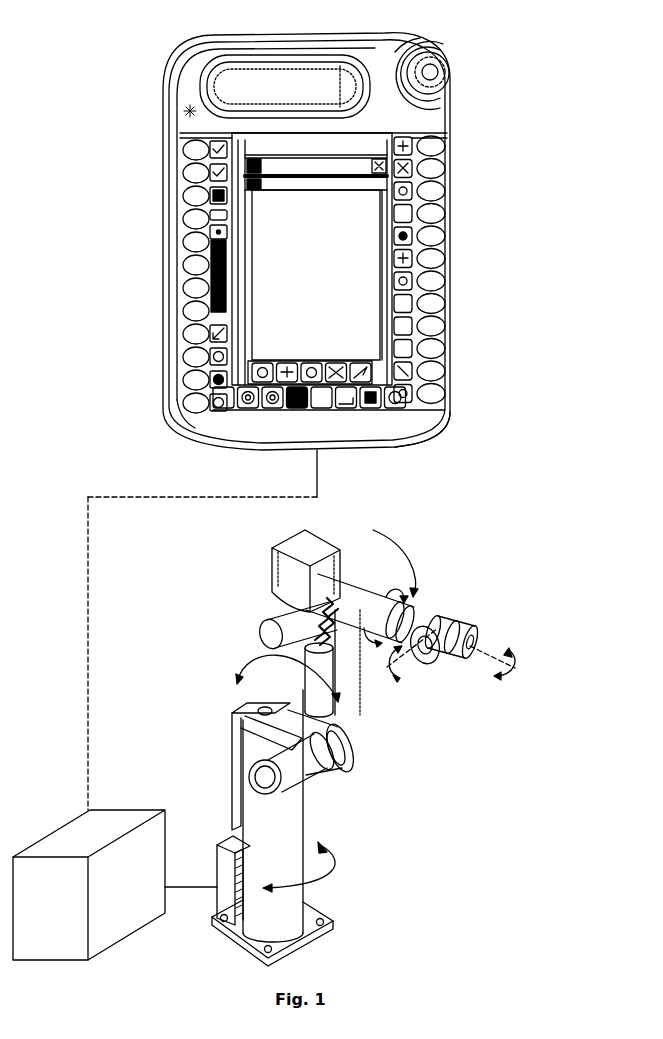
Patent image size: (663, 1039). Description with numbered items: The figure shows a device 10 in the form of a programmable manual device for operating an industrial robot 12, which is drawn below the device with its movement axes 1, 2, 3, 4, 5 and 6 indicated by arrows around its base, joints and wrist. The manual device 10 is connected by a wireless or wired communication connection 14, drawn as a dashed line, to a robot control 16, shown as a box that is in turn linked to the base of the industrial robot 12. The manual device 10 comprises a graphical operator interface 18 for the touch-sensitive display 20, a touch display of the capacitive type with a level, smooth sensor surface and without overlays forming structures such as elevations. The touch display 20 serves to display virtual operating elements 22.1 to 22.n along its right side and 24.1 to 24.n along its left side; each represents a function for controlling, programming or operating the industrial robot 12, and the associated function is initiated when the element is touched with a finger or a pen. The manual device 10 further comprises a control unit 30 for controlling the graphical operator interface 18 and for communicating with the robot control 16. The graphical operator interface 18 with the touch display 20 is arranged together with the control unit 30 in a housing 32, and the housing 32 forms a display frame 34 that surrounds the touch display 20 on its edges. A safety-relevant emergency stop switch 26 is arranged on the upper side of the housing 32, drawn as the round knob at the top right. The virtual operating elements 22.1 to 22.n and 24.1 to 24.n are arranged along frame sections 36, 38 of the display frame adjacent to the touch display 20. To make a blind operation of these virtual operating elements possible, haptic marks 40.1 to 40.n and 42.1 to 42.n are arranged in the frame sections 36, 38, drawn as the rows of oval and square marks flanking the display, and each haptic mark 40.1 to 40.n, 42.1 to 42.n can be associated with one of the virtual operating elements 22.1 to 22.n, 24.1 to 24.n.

The robot axis 1 is at (300, 867).
The robot axis 2 is at (284, 674).
The robot axis 3 is at (395, 561).
The robot axis 4 is at (386, 610).
The robot axis 5 is at (412, 668).
The robot axis 6 is at (492, 651).
The manual device 10 is at (213, 29).
The industrial robot 12 is at (198, 583).
The communication connection 14 is at (88, 600).
The robot control 16 is at (56, 846).
The graphical operator interface 18 is at (326, 223).
The touch display 20 is at (326, 298).
The virtual operating element 22.1 is at (416, 137).
The virtual operating element 22.n is at (416, 398).
The virtual operating element 24.1 is at (190, 147).
The virtual operating element 24.n is at (190, 401).
The emergency stop switch 26 is at (446, 72).
The control unit 30 is at (339, 458).
The housing 32 is at (190, 88).
The display frame 34 is at (444, 424).
The frame section 36 is at (386, 272).
The frame section 38 is at (233, 276).
The haptic mark 40.1 is at (434, 143).
The haptic mark 40.n is at (436, 402).
The haptic mark 42.1 is at (190, 156).
The haptic mark 42.n is at (185, 407).